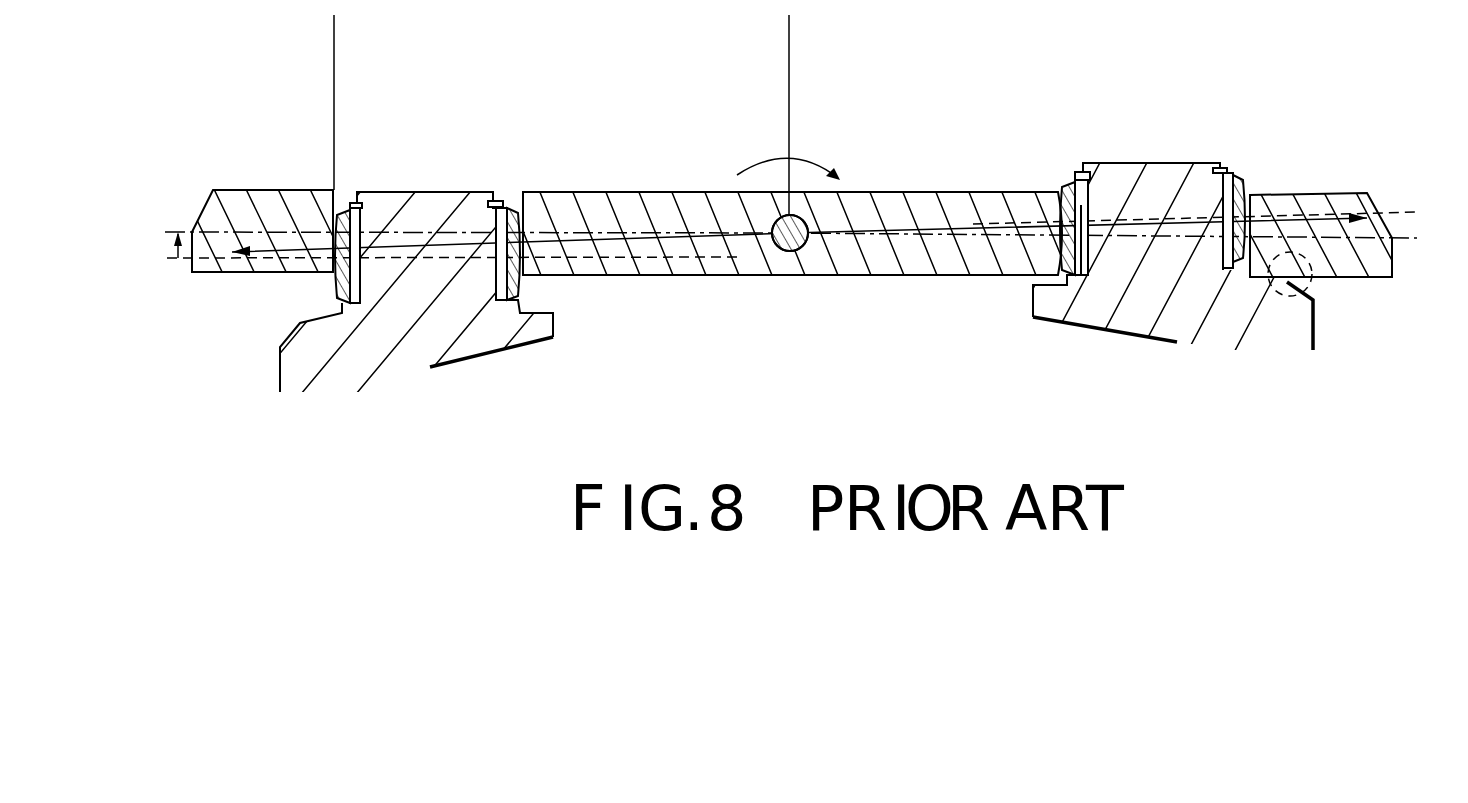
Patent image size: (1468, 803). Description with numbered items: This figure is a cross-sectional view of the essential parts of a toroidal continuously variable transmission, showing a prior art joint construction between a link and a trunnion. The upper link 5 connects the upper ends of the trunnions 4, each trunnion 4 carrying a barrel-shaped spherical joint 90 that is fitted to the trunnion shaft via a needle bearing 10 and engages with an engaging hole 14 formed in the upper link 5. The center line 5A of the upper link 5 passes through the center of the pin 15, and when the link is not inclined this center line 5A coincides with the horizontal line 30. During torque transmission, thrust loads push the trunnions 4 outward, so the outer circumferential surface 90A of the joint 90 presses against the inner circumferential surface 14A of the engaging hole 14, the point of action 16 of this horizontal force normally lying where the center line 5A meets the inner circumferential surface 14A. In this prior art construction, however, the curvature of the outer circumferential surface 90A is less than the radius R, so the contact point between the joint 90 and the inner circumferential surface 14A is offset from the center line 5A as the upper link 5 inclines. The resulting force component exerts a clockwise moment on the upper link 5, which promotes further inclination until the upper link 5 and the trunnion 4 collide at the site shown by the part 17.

The trunnion 4 is at (447, 190).
The upper link 5 is at (863, 193).
The center line of the upper link 5A is at (618, 218).
The needle bearing 10 is at (357, 283).
The engaging hole 14 is at (513, 195).
The inner circumferential surface of the engaging hole 14A is at (520, 198).
The pin 15 is at (787, 251).
The point of action 16 is at (330, 235).
The collision part 17 is at (1300, 280).
The horizontal line 30 is at (947, 228).
The barrel-shaped spherical joint 90 is at (347, 290).
The outer circumferential surface 90A is at (345, 300).
The radius R is at (334, 35).